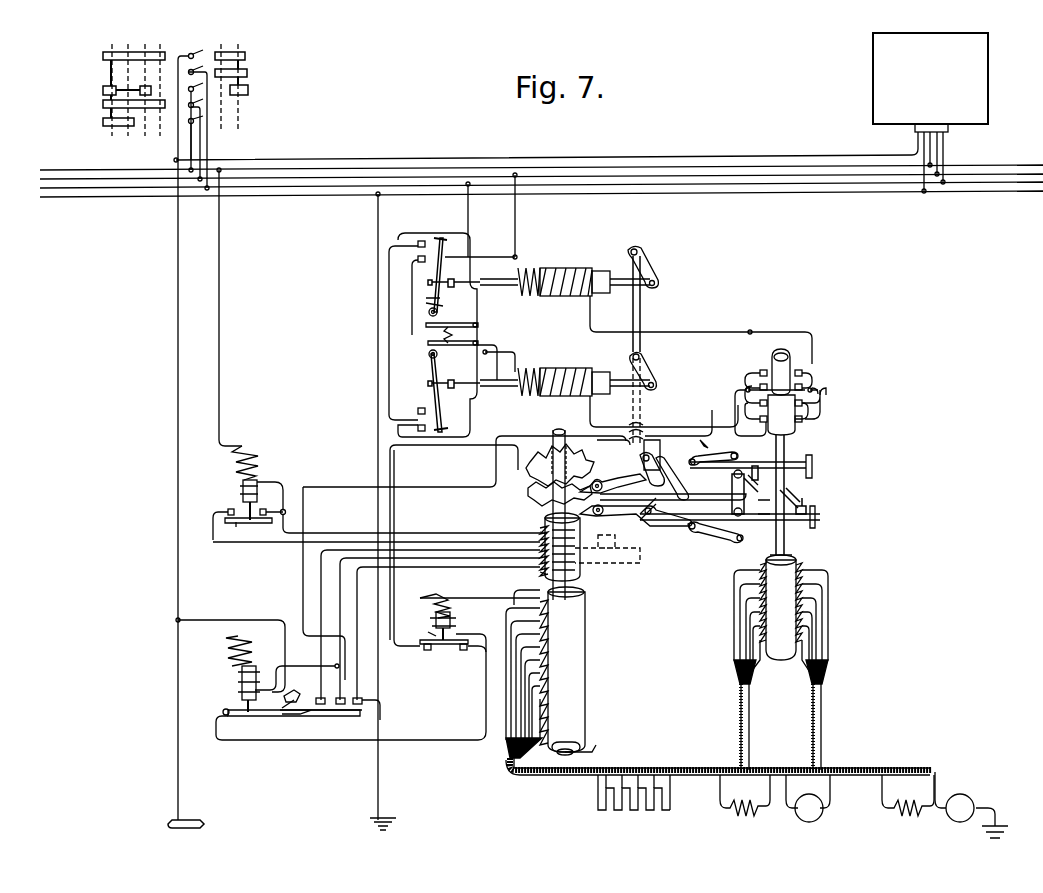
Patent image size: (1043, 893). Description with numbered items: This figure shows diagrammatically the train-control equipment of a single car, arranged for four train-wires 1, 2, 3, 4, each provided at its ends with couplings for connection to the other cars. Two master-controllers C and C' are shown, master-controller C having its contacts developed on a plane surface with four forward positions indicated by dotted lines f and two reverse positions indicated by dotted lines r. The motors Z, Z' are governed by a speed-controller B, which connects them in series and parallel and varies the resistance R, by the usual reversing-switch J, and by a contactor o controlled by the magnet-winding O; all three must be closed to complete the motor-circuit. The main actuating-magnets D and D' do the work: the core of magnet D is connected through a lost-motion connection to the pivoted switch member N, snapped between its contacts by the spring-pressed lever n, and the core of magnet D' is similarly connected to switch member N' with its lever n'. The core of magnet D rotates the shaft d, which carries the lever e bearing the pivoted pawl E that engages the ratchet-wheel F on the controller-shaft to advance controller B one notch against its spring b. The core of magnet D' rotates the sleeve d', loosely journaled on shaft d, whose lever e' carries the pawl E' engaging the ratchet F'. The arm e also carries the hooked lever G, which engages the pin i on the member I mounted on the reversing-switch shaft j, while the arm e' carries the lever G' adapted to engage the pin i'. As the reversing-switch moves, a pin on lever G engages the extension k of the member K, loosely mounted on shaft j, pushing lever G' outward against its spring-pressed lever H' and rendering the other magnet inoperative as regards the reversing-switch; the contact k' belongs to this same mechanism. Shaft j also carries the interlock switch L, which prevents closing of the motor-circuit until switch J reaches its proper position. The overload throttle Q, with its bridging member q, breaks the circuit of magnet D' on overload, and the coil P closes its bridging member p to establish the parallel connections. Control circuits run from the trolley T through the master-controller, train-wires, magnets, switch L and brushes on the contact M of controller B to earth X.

The train-wire 1 is at (536, 170).
The train-wire 2 is at (536, 179).
The train-wire 3 is at (536, 188).
The train-wire 4 is at (536, 197).
The master-controller C' is at (910, 113).
The master-controller C is at (230, 84).
The forward positions f is at (134, 79).
The reverse positions r is at (231, 76).
The switch member N is at (434, 335).
The switch member N' is at (445, 391).
The spring-pressed lever n is at (452, 323).
The spring-pressed lever n' is at (453, 352).
The main actuating-magnet D is at (565, 263).
The main actuating-magnet D' is at (565, 364).
The shaft d is at (645, 304).
The sleeve d' is at (651, 401).
The switch L is at (800, 372).
The ratchet-wheel F is at (560, 494).
The ratchet F' is at (560, 465).
The contact M is at (582, 560).
The pawl E is at (636, 514).
The pawl E' is at (613, 482).
The lever e is at (673, 483).
The lever e' is at (656, 463).
The spring-pressed lever H' is at (713, 460).
The member K is at (726, 490).
The arm or extension k is at (760, 510).
The contact k' is at (760, 464).
The member I is at (792, 498).
The pin i is at (790, 513).
The pin i' is at (750, 470).
The pivoted arm G is at (736, 523).
The lever G' is at (766, 465).
The reversing-switch J is at (766, 556).
The shaft j is at (792, 552).
The speed-controller B is at (586, 650).
The spring b is at (579, 744).
The resistance R is at (665, 818).
The motor Z is at (775, 806).
The motor Z' is at (945, 806).
The coil P is at (258, 470).
The bridging member p is at (234, 532).
The magnet-winding O is at (238, 670).
The contactor o is at (295, 695).
The overload circuit-breaker or throttle Q is at (436, 600).
The bridging member q is at (420, 629).
The trolley or collector-shoe T is at (200, 822).
The earth X is at (396, 820).